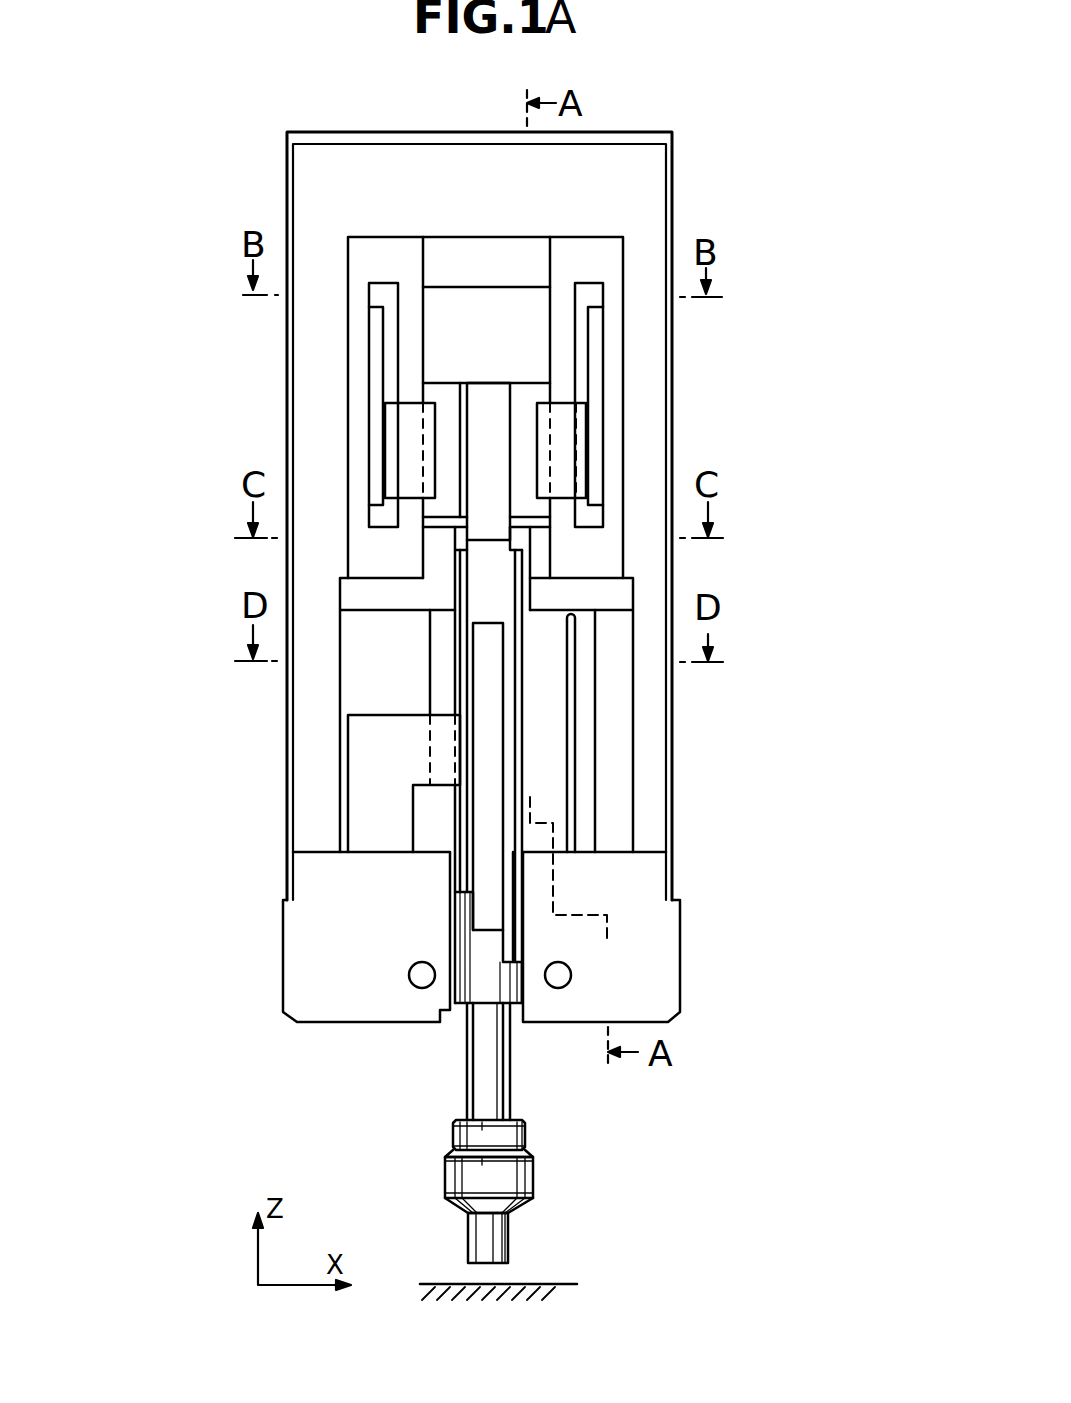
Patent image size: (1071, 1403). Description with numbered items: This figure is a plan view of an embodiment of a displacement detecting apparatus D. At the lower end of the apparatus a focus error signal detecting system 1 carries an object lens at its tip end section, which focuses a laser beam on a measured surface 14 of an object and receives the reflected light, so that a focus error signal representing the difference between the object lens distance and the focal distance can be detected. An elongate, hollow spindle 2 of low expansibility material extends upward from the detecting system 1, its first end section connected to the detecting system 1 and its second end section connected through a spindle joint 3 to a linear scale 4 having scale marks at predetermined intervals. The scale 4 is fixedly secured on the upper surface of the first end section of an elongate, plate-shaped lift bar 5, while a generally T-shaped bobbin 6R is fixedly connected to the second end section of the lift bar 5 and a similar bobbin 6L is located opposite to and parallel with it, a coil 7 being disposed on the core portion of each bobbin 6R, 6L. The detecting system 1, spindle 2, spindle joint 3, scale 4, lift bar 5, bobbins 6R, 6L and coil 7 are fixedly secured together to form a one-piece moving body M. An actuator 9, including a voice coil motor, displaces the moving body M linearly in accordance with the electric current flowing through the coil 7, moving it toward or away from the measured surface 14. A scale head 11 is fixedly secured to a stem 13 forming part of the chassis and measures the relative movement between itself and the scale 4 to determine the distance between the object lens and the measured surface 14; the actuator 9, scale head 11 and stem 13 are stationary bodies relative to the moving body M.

The displacement detecting apparatus D is at (697, 150).
The stem 13 is at (657, 998).
The actuator 9 is at (360, 362).
The bobbin 6L is at (443, 392).
The bobbin 6R is at (545, 392).
The coil 7 is at (395, 450).
The lift bar 5 is at (495, 567).
The scale 4 is at (490, 742).
The moving body M is at (456, 690).
The scale head 11 is at (362, 769).
The spindle joint 3 is at (465, 983).
The spindle 2 is at (467, 1100).
The focus error signal detecting system 1 is at (517, 1180).
The measured surface 14 is at (530, 1297).